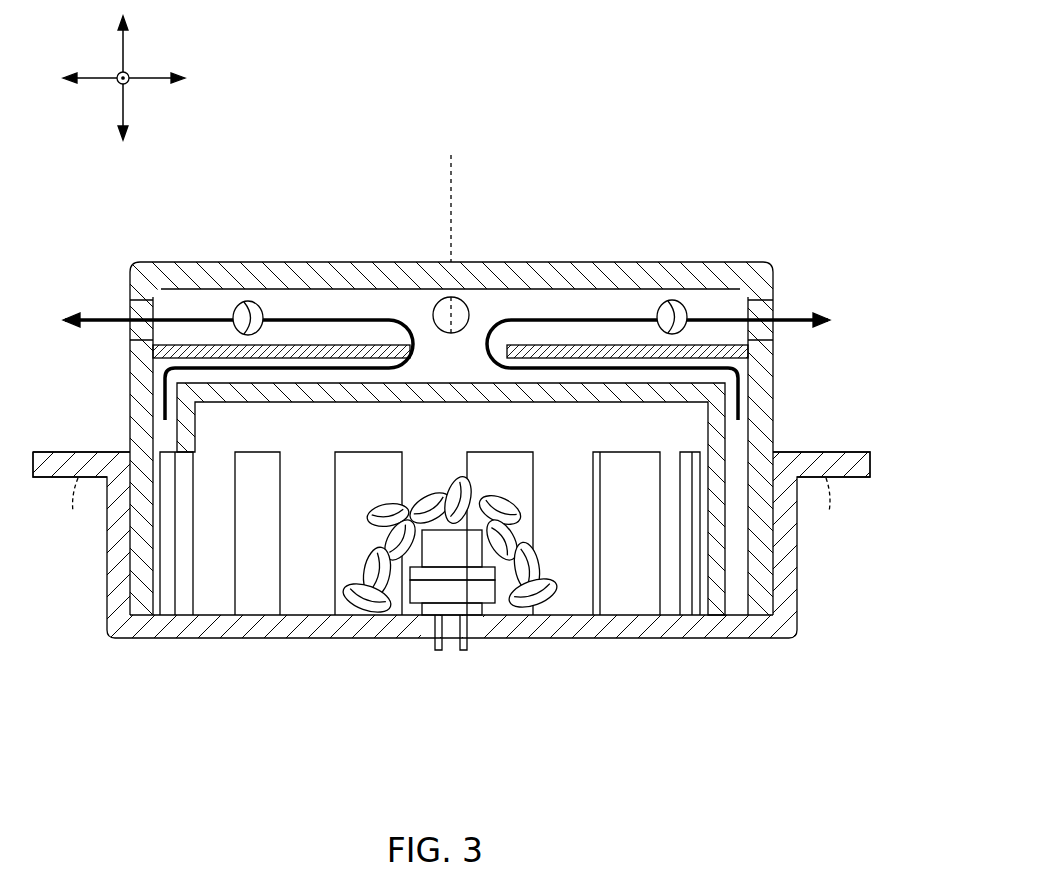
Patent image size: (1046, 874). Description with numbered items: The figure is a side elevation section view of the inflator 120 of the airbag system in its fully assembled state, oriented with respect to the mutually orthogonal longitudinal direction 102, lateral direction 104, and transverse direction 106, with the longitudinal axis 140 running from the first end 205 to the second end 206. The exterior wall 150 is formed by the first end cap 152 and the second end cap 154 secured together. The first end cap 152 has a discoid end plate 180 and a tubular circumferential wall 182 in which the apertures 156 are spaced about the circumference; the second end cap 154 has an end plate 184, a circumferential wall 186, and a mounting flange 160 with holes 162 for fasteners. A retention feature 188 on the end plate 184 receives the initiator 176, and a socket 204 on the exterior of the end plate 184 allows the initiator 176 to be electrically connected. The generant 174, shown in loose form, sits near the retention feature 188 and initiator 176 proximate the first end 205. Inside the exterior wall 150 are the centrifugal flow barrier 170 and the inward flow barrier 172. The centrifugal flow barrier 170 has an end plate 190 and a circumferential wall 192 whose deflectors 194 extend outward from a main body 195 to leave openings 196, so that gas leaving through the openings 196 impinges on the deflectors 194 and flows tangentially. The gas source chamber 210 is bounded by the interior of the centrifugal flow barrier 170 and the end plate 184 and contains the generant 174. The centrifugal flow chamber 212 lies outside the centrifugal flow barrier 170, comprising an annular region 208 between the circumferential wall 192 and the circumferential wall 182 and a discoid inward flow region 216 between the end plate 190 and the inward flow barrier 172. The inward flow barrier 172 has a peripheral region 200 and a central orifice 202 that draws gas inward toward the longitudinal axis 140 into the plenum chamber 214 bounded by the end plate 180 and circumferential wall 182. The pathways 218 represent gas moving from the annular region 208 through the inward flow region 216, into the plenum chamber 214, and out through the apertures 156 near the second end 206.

The longitudinal direction 102 is at (128, 62).
The lateral direction 104 is at (163, 72).
The transverse direction 106 is at (130, 85).
The inflator 120 is at (666, 79).
The longitudinal axis 140 is at (455, 187).
The exterior wall 150 is at (46, 438).
The first end cap 152 is at (495, 399).
The second end cap 154 is at (787, 654).
The apertures 156 is at (247, 300).
The mounting flange 160 is at (849, 438).
The holes 162 is at (454, 510).
The centrifugal flow barrier 170 is at (732, 438).
The inward flow barrier 172 is at (194, 335).
The generant 174 is at (455, 488).
The initiator 176 is at (430, 597).
The end plate 180 is at (372, 262).
The circumferential wall 182 is at (143, 366).
The end plate 184 is at (653, 636).
The circumferential wall 186 is at (108, 587).
The retention feature 188 is at (499, 615).
The end plate 190 is at (305, 393).
The circumferential wall 192 is at (713, 422).
The deflectors 194 is at (365, 457).
The main body 195 is at (310, 605).
The openings 196 is at (190, 458).
The peripheral region 200 is at (750, 348).
The orifice 202 is at (290, 328).
The socket 204 is at (477, 627).
The first end 205 is at (100, 663).
The second end 206 is at (117, 238).
The annular region 208 is at (162, 432).
The gas source chamber 210 is at (670, 568).
The centrifugal flow chamber 212 is at (752, 563).
The plenum chamber 214 is at (568, 312).
The inward flow region 216 is at (451, 389).
The pathways 218 is at (112, 315).